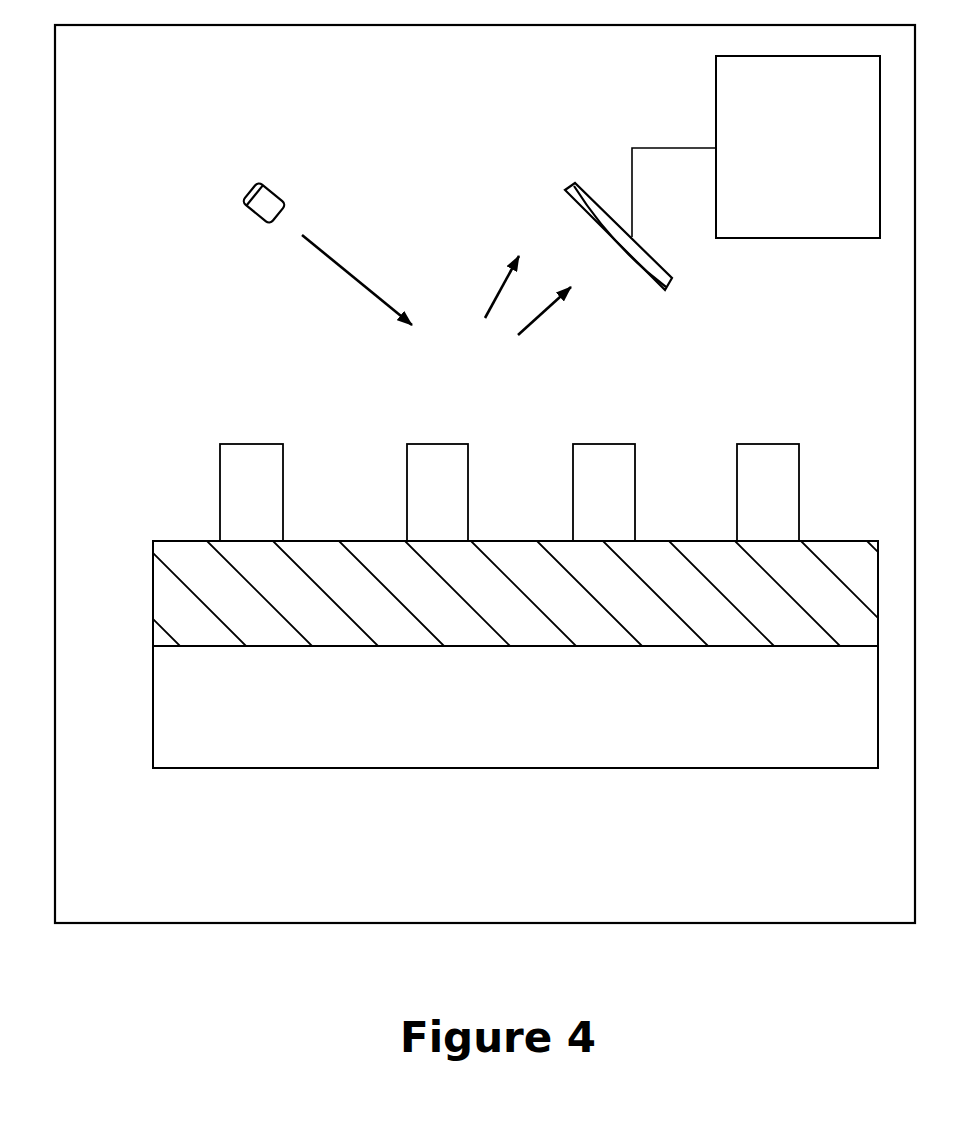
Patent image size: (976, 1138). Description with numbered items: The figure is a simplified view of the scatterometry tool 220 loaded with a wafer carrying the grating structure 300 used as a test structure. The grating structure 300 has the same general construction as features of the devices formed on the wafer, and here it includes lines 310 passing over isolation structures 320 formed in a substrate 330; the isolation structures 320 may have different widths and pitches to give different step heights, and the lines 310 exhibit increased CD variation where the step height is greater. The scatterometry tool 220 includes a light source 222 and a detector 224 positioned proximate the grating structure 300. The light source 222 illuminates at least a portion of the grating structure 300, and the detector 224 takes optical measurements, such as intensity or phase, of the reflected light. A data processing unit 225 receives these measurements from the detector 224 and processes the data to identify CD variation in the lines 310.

The scatterometry tool 220 is at (864, 880).
The light source 222 is at (268, 204).
The detector 224 is at (570, 186).
The data processing unit 225 is at (778, 208).
The grating structure 300 is at (172, 366).
The lines 310 is at (243, 462).
The isolation structures 320 is at (156, 563).
The substrate 330 is at (172, 713).